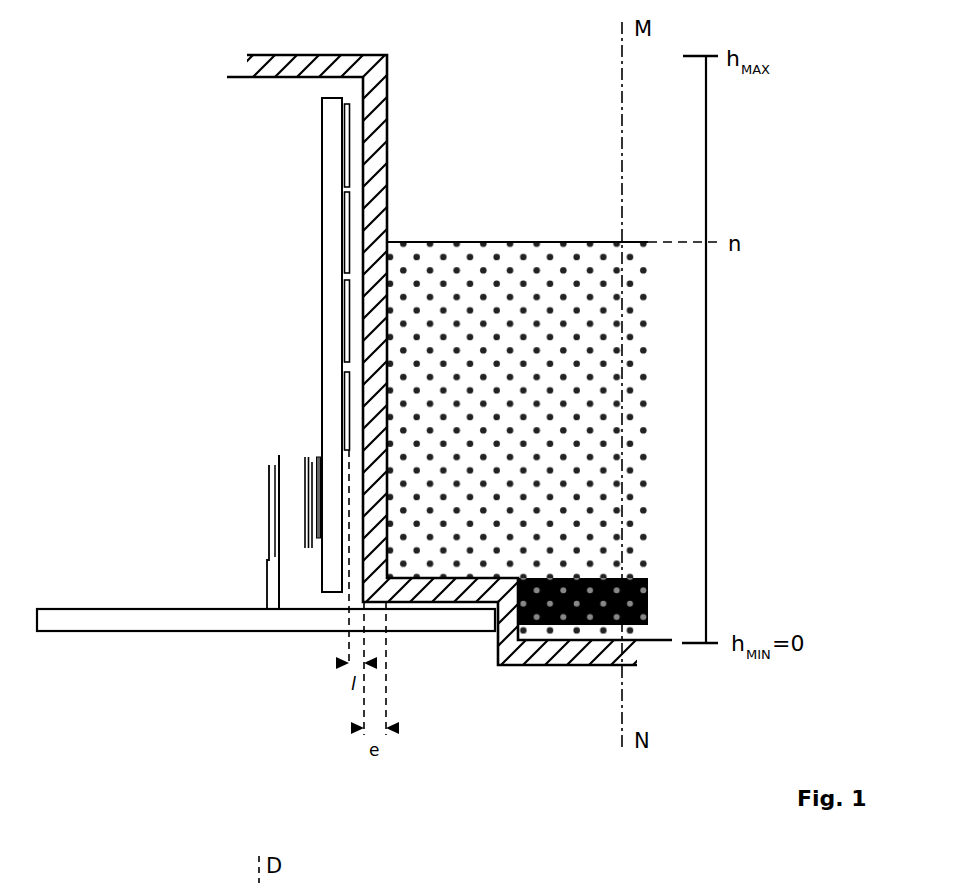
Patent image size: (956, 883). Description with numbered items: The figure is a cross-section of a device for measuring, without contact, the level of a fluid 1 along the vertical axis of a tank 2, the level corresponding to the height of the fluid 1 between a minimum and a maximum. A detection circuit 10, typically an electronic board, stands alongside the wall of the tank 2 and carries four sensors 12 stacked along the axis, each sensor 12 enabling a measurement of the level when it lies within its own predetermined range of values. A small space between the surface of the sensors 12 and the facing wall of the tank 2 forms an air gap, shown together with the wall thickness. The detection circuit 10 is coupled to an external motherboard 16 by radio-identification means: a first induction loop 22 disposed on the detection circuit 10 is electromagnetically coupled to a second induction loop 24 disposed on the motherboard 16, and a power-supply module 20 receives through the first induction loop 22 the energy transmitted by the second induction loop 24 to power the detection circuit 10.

The fluid 1 is at (494, 252).
The tank 2 is at (375, 67).
The detection circuit 10 is at (332, 108).
The sensors 12 is at (345, 143).
The motherboard 16 is at (70, 615).
The power-supply module 20 is at (318, 460).
The first induction loop 22 is at (306, 550).
The second induction loop 24 is at (275, 503).